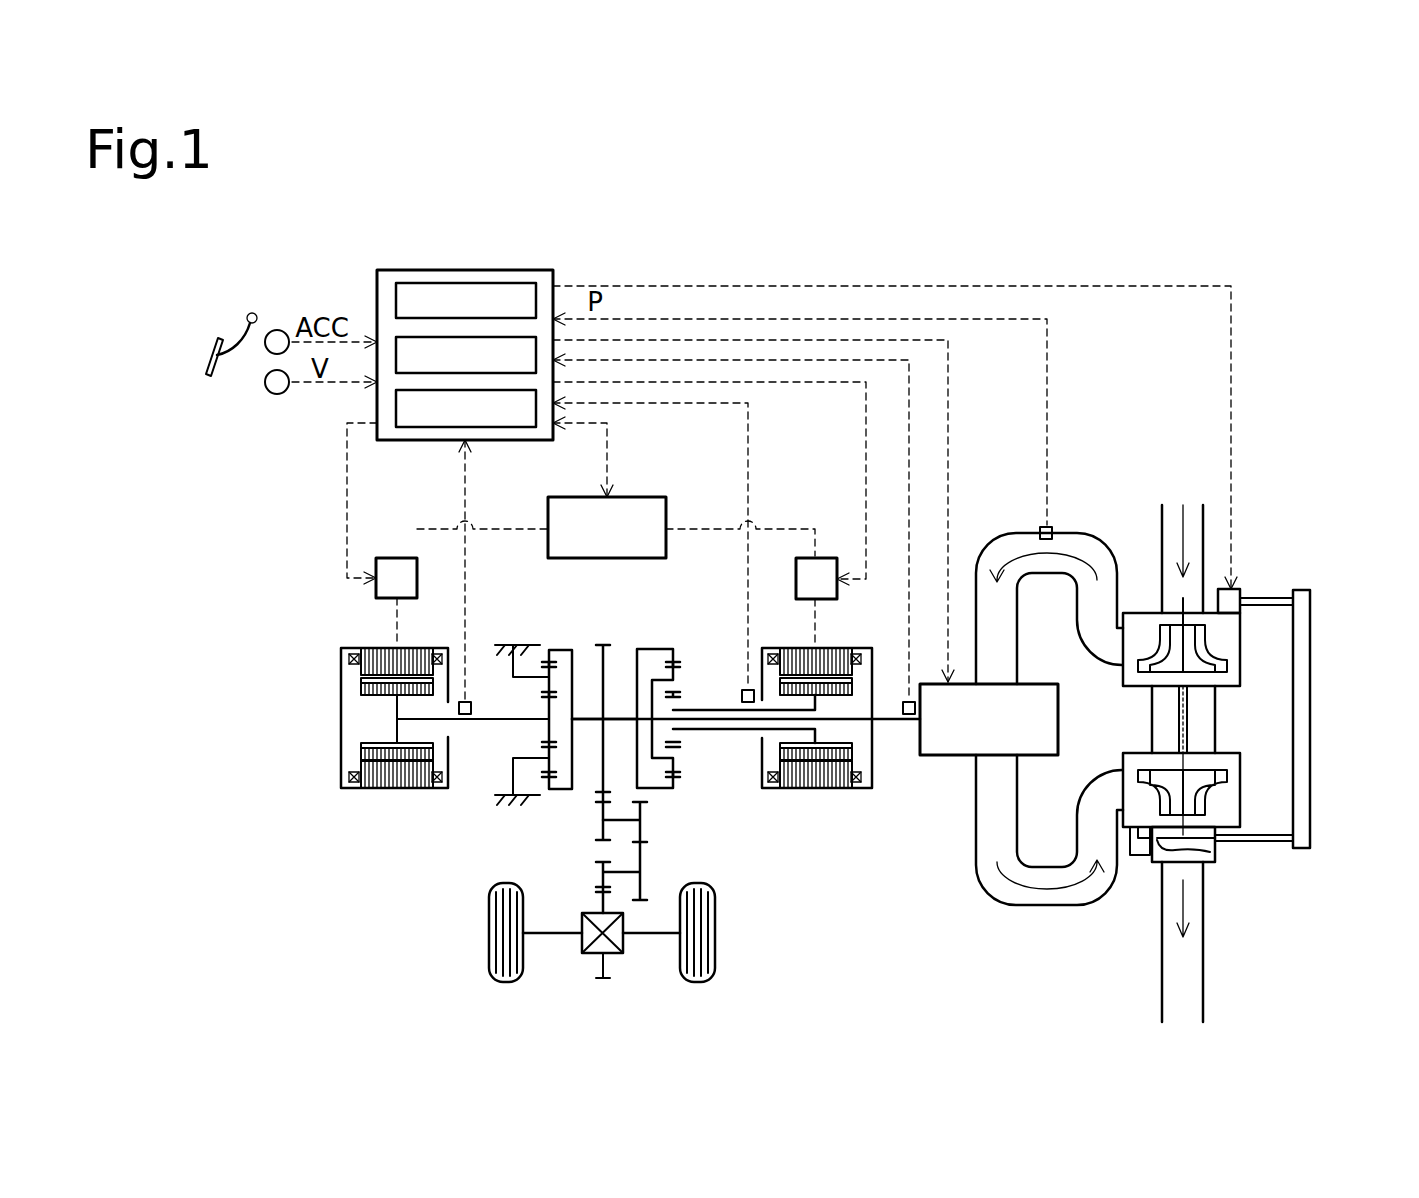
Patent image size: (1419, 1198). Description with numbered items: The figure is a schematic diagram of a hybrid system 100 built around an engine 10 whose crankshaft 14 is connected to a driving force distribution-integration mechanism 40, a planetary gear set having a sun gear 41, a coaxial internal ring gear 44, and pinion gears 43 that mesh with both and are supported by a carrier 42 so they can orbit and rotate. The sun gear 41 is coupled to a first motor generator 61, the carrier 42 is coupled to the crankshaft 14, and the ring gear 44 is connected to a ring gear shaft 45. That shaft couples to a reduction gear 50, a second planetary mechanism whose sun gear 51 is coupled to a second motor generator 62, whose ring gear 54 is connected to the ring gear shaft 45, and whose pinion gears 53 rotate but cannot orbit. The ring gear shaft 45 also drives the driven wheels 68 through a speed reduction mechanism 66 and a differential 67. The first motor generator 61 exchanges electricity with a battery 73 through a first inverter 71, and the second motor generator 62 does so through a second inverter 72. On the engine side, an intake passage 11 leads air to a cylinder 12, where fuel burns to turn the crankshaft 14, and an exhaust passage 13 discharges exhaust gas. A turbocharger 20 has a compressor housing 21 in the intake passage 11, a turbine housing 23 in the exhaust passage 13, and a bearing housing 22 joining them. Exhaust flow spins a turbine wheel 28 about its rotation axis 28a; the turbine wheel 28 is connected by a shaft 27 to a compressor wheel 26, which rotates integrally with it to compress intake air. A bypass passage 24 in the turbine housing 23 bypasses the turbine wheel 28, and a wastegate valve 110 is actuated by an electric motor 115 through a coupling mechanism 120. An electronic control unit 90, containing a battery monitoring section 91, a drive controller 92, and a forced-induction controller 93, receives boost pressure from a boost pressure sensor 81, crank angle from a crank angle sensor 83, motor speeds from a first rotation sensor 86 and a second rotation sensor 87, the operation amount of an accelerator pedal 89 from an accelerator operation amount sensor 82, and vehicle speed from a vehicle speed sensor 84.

The hybrid system 100 is at (1221, 263).
The engine 10 is at (1094, 431).
The intake passage 11 is at (1162, 518).
The cylinder 12 is at (940, 755).
The exhaust passage 13 is at (1160, 968).
The crankshaft 14 is at (895, 722).
The turbocharger 20 is at (1231, 747).
The compressor housing 21 is at (1140, 613).
The bearing housing 22 is at (1217, 700).
The turbine housing 23 is at (1240, 808).
The bypass passage 24 is at (1135, 855).
The compressor wheel 26 is at (1130, 675).
The shaft 27 is at (1190, 735).
The turbine wheel 28 is at (1130, 760).
The rotation axis 28a is at (1180, 710).
The driving force distribution-integration mechanism 40 is at (726, 705).
The sun gear 41 is at (680, 695).
The carrier 42 is at (658, 790).
The pinion gears 43 is at (680, 745).
The ring gear 44 is at (680, 666).
The ring gear shaft 45 is at (620, 715).
The reduction gear 50 is at (527, 698).
The sun gear 51 is at (550, 695).
The pinion gears 53 is at (555, 785).
The ring gear 54 is at (549, 650).
The first motor generator 61 is at (862, 649).
The second motor generator 62 is at (341, 735).
The speed reduction mechanism 66 is at (674, 857).
The differential 67 is at (590, 955).
The driven wheels 68 is at (489, 945).
The first inverter 71 is at (815, 558).
The second inverter 72 is at (397, 558).
The battery 73 is at (640, 497).
The boost pressure sensor 81 is at (1042, 527).
The accelerator operation amount sensor 82 is at (278, 330).
The crank angle sensor 83 is at (912, 702).
The vehicle speed sensor 84 is at (277, 394).
The first rotation sensor 86 is at (752, 690).
The second rotation sensor 87 is at (466, 700).
The accelerator pedal 89 is at (207, 370).
The electronic control unit 90 is at (553, 270).
The battery monitoring section 91 is at (490, 283).
The drive controller 92 is at (396, 337).
The forced-induction controller 93 is at (490, 440).
The wastegate valve 110 is at (1213, 850).
The electric motor 115 is at (1240, 590).
The coupling mechanism 120 is at (1325, 642).